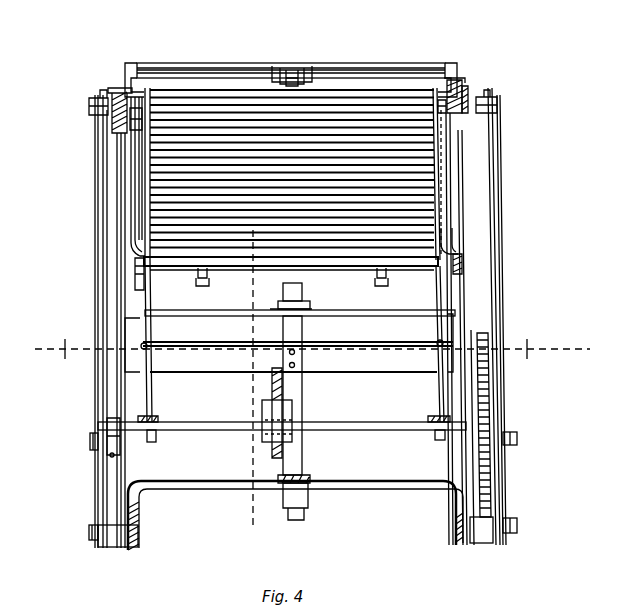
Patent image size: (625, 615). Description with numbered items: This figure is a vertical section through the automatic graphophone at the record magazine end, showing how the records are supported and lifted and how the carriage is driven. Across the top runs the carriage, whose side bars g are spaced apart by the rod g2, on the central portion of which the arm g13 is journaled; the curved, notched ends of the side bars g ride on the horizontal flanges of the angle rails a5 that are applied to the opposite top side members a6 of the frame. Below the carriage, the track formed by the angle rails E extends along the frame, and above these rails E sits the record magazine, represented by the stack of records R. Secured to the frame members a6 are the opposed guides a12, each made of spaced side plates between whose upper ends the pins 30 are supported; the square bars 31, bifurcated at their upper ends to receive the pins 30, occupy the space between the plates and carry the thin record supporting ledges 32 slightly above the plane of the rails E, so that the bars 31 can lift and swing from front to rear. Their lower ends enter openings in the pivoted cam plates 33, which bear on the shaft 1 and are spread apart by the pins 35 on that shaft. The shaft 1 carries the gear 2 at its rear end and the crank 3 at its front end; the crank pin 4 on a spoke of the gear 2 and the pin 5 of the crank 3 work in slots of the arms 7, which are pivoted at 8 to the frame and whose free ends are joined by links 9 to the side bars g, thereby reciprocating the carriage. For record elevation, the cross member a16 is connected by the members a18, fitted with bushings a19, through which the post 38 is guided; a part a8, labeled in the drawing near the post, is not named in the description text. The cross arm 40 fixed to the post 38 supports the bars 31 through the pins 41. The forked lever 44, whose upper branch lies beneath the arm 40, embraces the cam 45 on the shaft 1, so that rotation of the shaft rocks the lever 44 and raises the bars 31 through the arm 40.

The side bars g is at (152, 66).
The arm g13 is at (298, 66).
The rod g2 is at (382, 76).
The radiator core R is at (234, 115).
The angle rails E is at (196, 282).
The angle rails a5 is at (458, 82).
The top side members a6 is at (118, 88).
The links 9 is at (100, 92).
The arms 7 is at (95, 297).
The pins 30 is at (130, 136).
The guides a12 is at (510, 188).
The bars 31 is at (135, 226).
The record supporting ledges 32 is at (136, 256).
The pin 5 is at (88, 446).
The cross arm 40 is at (344, 346).
The pins 41 is at (148, 345).
The cross member a16 is at (334, 316).
The cross piece a8 is at (272, 306).
The post 38 is at (303, 392).
The forked lever 44 is at (272, 384).
The cam 45 is at (262, 408).
The shaft 1 is at (384, 420).
The cam plates 33 is at (158, 416).
The pins 35 is at (158, 438).
The gear 2 is at (490, 390).
The crank pin 4 is at (88, 440).
The crank 3 is at (110, 456).
The pivot 8 is at (88, 534).
The members a18 is at (312, 482).
The bushings a19 is at (310, 502).